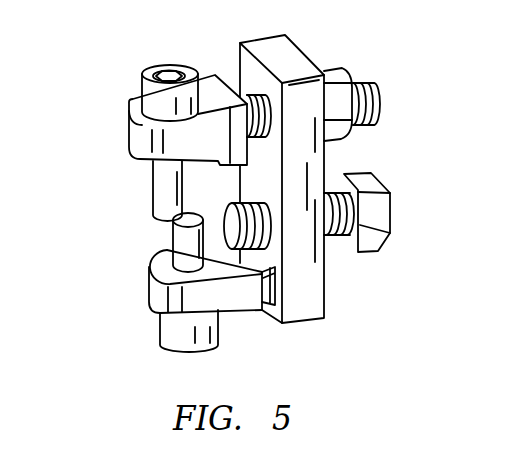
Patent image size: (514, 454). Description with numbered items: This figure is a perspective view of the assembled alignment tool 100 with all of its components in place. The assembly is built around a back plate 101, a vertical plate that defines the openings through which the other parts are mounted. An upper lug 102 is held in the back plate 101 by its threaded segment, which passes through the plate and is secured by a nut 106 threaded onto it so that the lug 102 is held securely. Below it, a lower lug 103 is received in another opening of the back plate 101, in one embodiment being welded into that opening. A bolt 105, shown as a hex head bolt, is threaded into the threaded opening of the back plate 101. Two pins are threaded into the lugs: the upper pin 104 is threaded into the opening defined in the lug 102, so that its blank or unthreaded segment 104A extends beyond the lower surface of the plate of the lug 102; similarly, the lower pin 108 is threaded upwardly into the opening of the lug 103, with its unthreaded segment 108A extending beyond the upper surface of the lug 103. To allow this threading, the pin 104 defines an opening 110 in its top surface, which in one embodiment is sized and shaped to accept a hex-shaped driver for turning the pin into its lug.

The alignment tool 100 is at (423, 98).
The back plate 101 is at (295, 52).
The lug 102 is at (127, 118).
The lug 103 is at (147, 278).
The pin 104 is at (142, 73).
The unthreaded segment 104A is at (152, 187).
The bolt 105 is at (388, 197).
The nut 106 is at (351, 140).
The pin 108 is at (158, 327).
The unthreaded segment 108A is at (173, 240).
The opening 110 is at (164, 70).